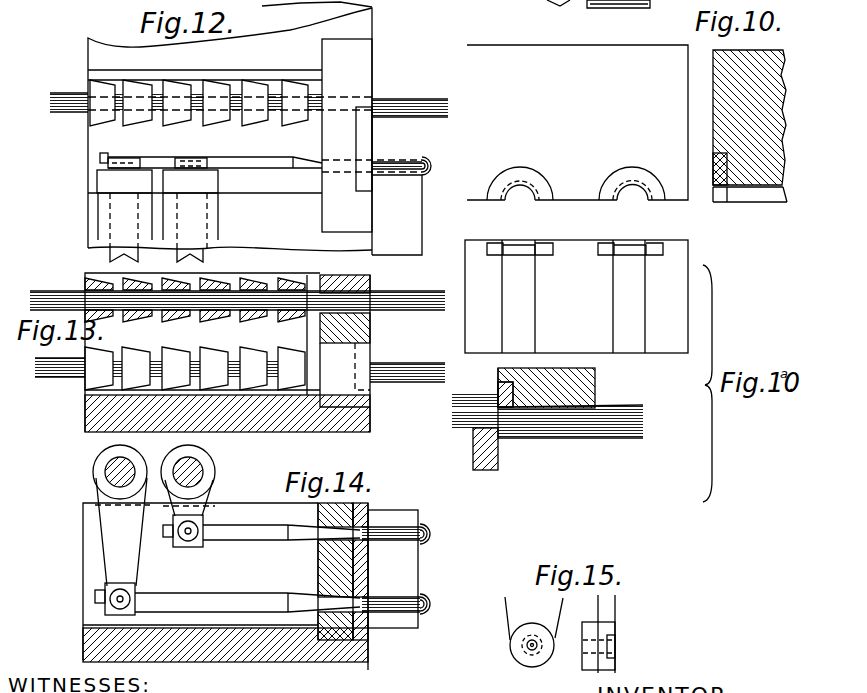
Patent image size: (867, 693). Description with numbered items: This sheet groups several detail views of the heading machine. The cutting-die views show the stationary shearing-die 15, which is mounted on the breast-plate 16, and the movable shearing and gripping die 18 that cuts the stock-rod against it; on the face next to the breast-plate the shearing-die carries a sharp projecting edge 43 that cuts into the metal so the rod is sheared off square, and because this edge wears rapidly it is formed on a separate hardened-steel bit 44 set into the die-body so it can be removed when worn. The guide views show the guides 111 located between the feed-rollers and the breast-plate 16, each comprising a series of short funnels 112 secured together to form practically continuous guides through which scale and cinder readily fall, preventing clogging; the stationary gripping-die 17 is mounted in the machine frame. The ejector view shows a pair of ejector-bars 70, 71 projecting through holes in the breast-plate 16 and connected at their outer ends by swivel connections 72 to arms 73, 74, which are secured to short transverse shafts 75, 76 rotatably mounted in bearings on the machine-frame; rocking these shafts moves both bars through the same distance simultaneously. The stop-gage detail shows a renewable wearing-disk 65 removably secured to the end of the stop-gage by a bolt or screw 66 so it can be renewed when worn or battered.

In FIG. 12, the guides 111 is at (201, 80).
In FIG. 12, the breast-plate 16 is at (332, 216).
In FIG. 12, the stationary gripping-die 17 is at (410, 221).
In FIG. 13, the short funnels 112 is at (172, 361).
In FIG. 14, the transverse shaft 76 is at (133, 463).
In FIG. 14, the transverse shaft 75 is at (201, 463).
In FIG. 14, the arm 74 is at (121, 532).
In FIG. 14, the arm 73 is at (212, 498).
In FIG. 14, the swivel connections 72 is at (199, 547).
In FIG. 14, the ejector-bar 70 is at (267, 534).
In FIG. 14, the ejector-bar 71 is at (270, 608).
In FIG. 10A, the bit 44 is at (577, 122).
In FIG. 10A, the movable shearing and gripping die 18 is at (583, 382).
In FIG. 10A, the stationary shearing-die 15 is at (483, 470).
In FIG. 10, the projecting edge 43 is at (720, 193).
In FIG. 15, the wearing-disks 65 is at (590, 658).
In FIG. 15, the bolt or screw 66 is at (612, 642).